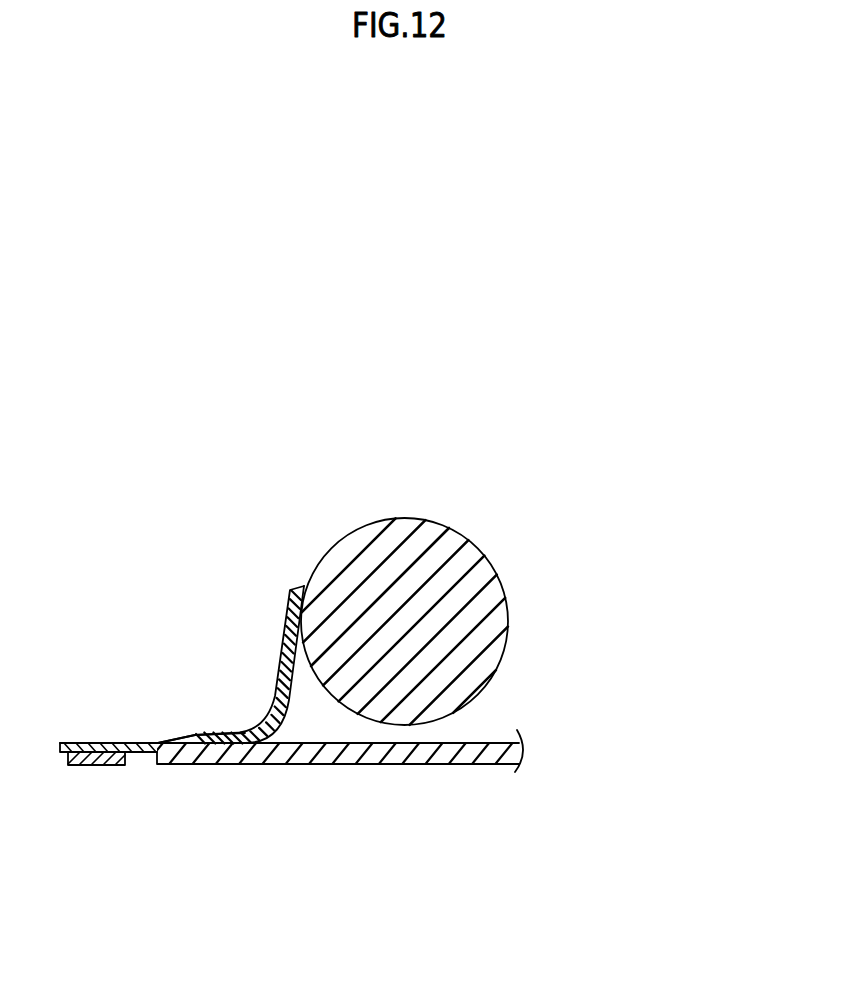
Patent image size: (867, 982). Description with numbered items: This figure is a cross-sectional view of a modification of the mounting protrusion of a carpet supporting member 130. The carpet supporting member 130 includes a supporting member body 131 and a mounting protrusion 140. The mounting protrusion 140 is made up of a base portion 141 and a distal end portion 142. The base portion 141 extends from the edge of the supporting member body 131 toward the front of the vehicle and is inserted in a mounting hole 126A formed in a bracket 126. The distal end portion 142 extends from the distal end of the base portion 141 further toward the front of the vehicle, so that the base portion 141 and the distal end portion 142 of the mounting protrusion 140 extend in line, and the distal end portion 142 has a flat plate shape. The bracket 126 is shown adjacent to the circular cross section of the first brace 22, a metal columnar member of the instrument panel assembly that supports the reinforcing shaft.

The first brace 22 is at (408, 590).
The bracket 126 is at (215, 736).
The mounting hole 126A is at (192, 735).
The carpet supporting member 130 is at (283, 856).
The supporting member body 131 is at (388, 752).
The mounting protrusion 140 is at (100, 862).
The base portion 141 is at (126, 766).
The distal end portion 142 is at (83, 749).